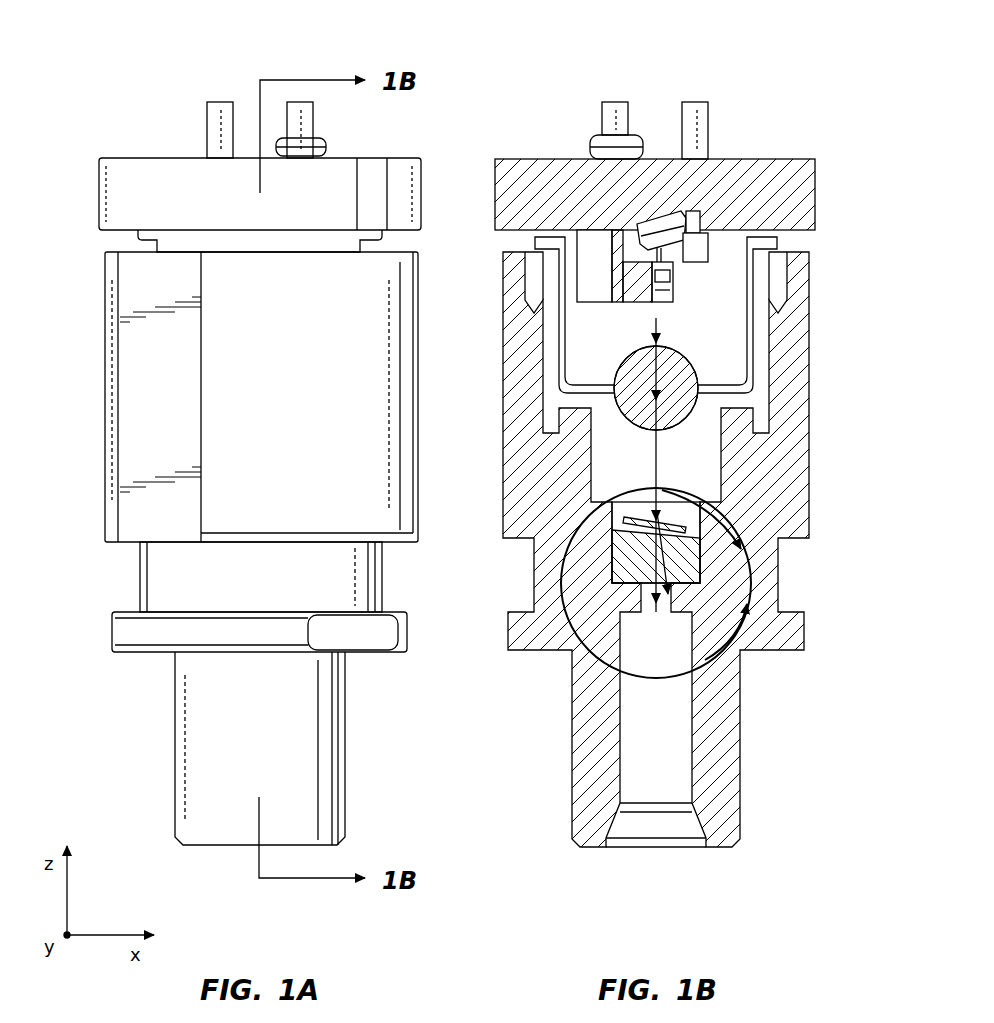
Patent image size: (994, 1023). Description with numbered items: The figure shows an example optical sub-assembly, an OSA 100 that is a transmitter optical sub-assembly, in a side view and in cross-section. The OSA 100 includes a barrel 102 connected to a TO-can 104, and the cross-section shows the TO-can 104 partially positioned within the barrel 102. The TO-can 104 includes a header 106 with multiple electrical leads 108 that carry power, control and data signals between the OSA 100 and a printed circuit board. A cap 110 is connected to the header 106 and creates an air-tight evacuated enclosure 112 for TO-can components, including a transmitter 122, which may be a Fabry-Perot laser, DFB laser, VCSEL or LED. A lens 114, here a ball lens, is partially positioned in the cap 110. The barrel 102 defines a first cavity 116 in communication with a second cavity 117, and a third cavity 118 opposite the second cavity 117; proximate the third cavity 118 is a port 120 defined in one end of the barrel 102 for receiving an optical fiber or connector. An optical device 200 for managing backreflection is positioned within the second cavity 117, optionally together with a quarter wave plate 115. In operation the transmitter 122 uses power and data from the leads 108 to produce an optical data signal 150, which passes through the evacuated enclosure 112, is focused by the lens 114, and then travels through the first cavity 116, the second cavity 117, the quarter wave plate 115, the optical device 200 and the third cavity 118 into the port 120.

In FIG. 1A, the OSA 100 is at (132, 66).
In FIG. 1B, the OSA 100 is at (562, 66).
In FIG. 1A, the barrel 102 is at (105, 368).
In FIG. 1B, the barrel 102 is at (503, 368).
In FIG. 1A, the TO-can 104 is at (425, 180).
In FIG. 1B, the TO-can 104 is at (820, 177).
In FIG. 1A, the header 106 is at (376, 174).
In FIG. 1B, the header 106 is at (752, 160).
In FIG. 1A, the electrical leads 108 is at (322, 88).
In FIG. 1B, the electrical leads 108 is at (717, 88).
In FIG. 1B, the cap 110 is at (758, 272).
In FIG. 1B, the evacuated enclosure 112 is at (613, 344).
In FIG. 1B, the lens 114 is at (677, 367).
In FIG. 1B, the quarter wave plate 115 is at (625, 523).
In FIG. 1B, the first cavity 116 is at (698, 468).
In FIG. 1B, the second cavity 117 is at (680, 517).
In FIG. 1B, the third cavity 118 is at (647, 602).
In FIG. 1B, the port 120 is at (658, 743).
In FIG. 1B, the transmitter 122 is at (675, 297).
In FIG. 1B, the optical data signal 150 is at (660, 318).
In FIG. 1B, the optical device 200 is at (690, 559).